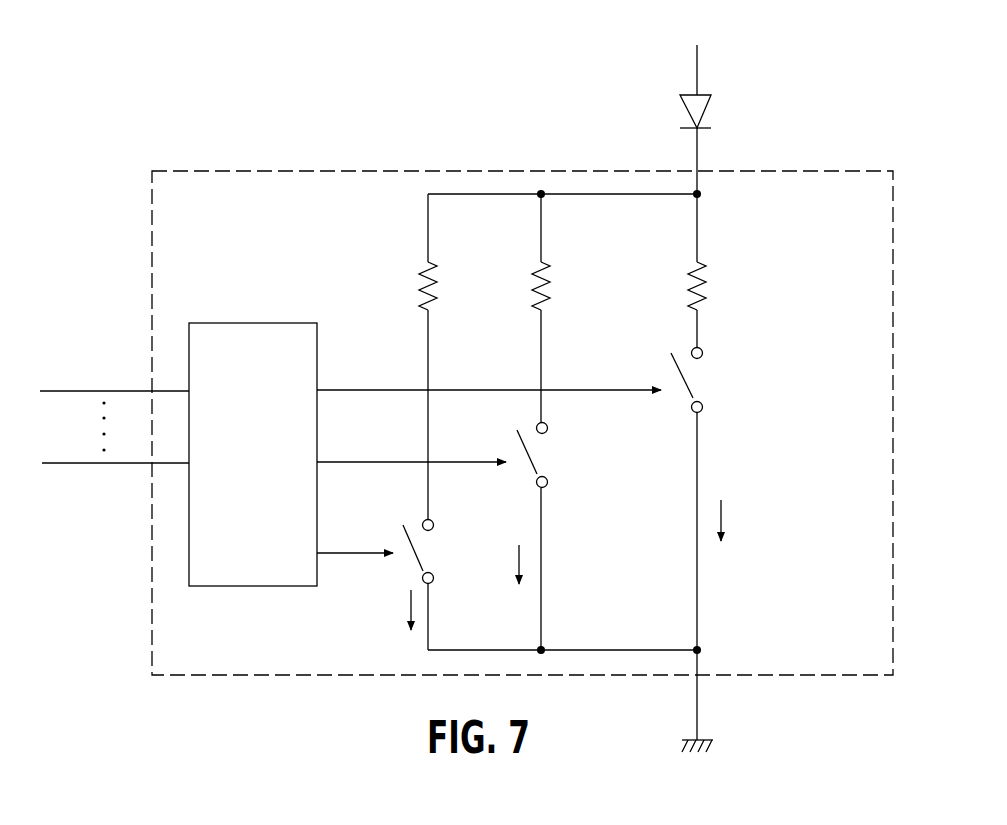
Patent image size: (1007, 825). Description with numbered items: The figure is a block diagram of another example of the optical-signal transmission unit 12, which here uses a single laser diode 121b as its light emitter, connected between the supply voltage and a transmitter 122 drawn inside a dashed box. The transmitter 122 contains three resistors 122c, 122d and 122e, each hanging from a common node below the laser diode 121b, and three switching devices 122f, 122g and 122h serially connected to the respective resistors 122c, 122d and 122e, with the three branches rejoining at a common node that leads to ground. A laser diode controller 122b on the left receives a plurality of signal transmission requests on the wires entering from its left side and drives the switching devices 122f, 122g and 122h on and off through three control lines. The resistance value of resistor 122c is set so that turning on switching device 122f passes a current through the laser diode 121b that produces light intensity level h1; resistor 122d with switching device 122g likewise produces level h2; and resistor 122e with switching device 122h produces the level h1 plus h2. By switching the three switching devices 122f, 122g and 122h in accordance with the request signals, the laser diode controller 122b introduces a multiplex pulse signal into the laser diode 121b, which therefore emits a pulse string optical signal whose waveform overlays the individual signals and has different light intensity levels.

The optical-signal transmission unit 12 is at (846, 106).
The laser diode 121b is at (705, 95).
The transmitter 122 is at (186, 157).
The laser diode controller 122b is at (270, 322).
The resistor 122c is at (698, 264).
The resistor 122d is at (543, 264).
The resistor 122e is at (430, 264).
The switching device 122f is at (690, 378).
The switching device 122g is at (538, 448).
The switching device 122h is at (424, 545).